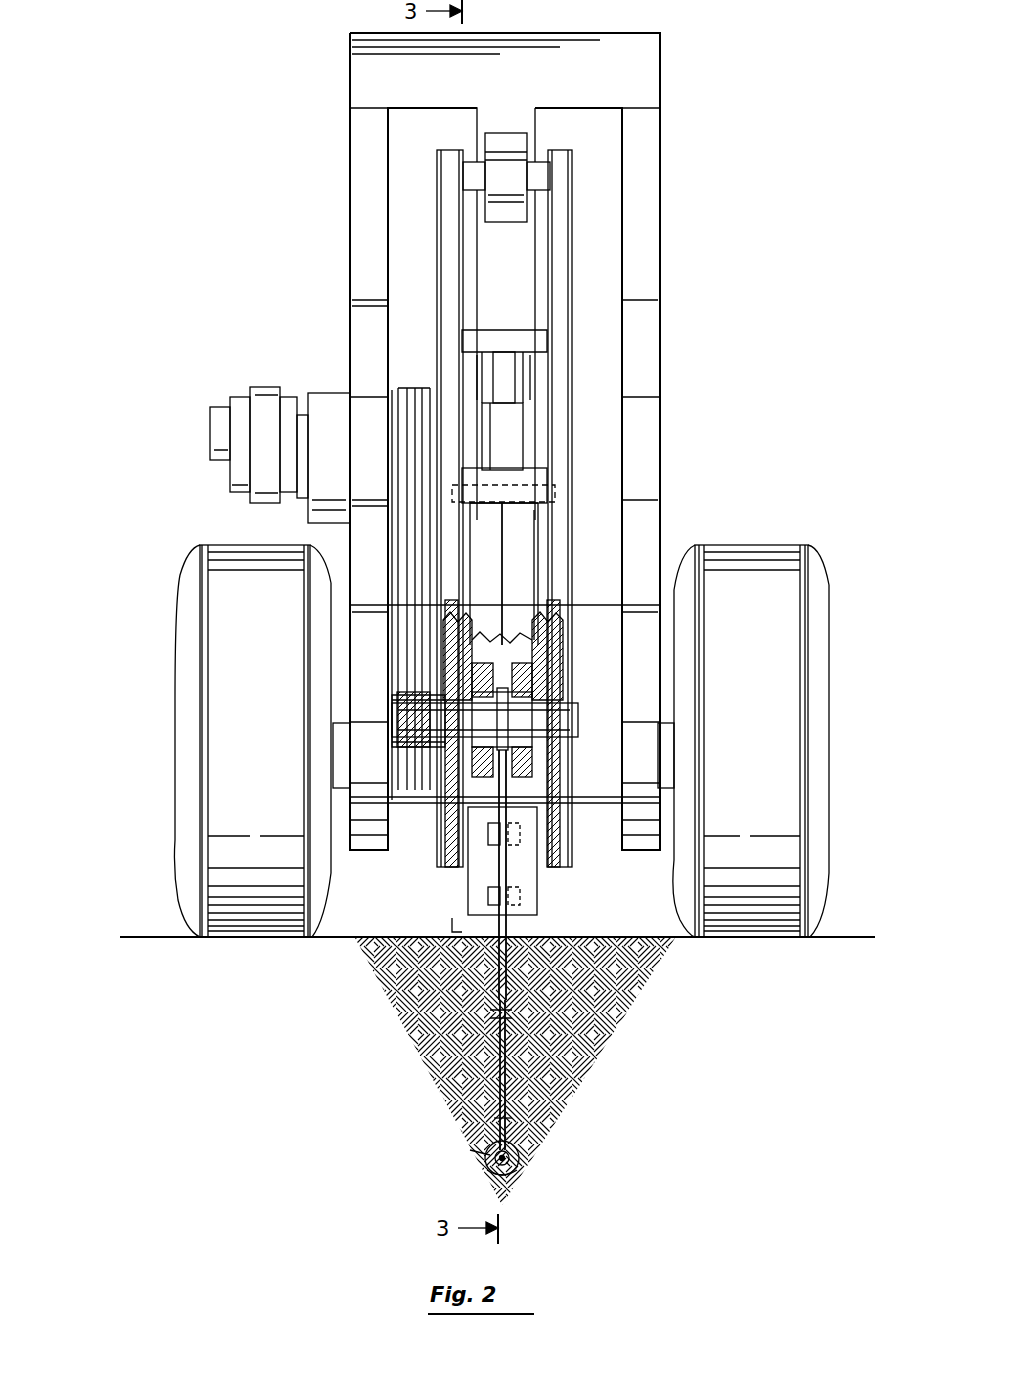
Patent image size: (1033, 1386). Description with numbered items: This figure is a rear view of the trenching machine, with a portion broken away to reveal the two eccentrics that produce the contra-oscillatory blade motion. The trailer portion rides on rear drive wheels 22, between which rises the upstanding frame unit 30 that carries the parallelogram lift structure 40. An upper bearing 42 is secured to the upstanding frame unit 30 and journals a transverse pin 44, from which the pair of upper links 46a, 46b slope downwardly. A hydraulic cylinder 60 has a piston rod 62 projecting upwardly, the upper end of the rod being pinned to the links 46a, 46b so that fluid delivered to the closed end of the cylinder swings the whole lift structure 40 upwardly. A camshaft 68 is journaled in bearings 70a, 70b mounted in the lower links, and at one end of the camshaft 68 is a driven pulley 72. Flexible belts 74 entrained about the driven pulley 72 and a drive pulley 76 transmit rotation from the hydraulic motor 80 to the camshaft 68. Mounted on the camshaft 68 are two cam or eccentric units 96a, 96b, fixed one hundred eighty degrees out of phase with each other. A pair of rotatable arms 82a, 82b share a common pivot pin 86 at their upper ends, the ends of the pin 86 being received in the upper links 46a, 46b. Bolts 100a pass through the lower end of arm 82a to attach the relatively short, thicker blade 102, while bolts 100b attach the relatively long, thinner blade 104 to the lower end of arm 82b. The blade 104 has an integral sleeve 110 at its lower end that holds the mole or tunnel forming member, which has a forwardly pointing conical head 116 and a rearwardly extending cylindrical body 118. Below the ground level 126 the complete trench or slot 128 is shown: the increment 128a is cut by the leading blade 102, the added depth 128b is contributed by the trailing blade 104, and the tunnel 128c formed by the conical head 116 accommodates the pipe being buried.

The rear drive wheels 22 is at (180, 813).
The upstanding frame unit 30 is at (660, 60).
The parallelogram lift structure 40 is at (583, 325).
The upper bearing 42 is at (510, 152).
The transverse pin 44 is at (540, 172).
The link 46a is at (440, 247).
The link 46b is at (575, 226).
The hydraulic cylinder 60 is at (512, 427).
The piston rod 62 is at (510, 383).
The camshaft 68 is at (565, 715).
The bearing 70a is at (450, 790).
The bearing 70b is at (562, 750).
The driven pulley 72 is at (400, 683).
The flexible belts 74 is at (400, 553).
The drive pulley 76 is at (398, 388).
The hydraulic motor 80 is at (240, 397).
The rotatable arm 82a is at (497, 541).
The rotatable arm 82b is at (530, 562).
The common pivot pin 86 is at (553, 485).
The eccentric unit 96a is at (480, 777).
The eccentric unit 96b is at (525, 668).
The bolts 100a is at (520, 893).
The bolts 100b is at (485, 893).
The blade 102 is at (506, 936).
The blade 104 is at (505, 1088).
The sleeve 110 is at (512, 1150).
The conical head 116 is at (528, 1176).
The cylindrical body 118 is at (490, 1170).
The ground level 126 is at (148, 936).
The trench 128 is at (500, 1055).
The trench increment 128a is at (505, 1015).
The added trench depth 128b is at (505, 1120).
The tunnel 128c is at (486, 1152).